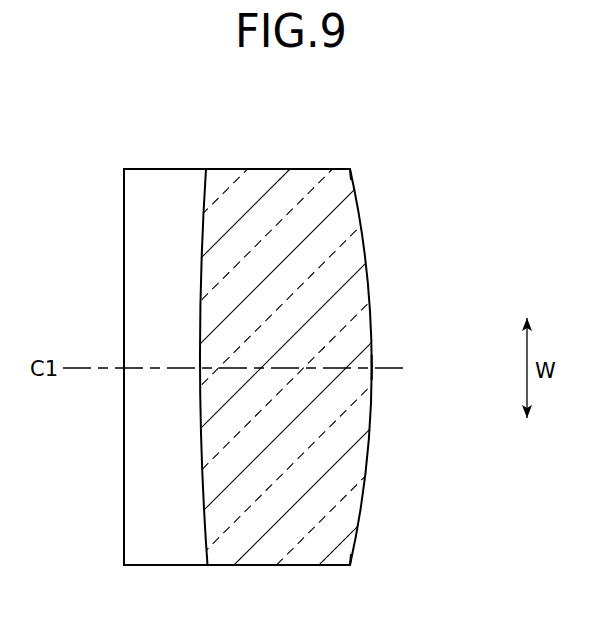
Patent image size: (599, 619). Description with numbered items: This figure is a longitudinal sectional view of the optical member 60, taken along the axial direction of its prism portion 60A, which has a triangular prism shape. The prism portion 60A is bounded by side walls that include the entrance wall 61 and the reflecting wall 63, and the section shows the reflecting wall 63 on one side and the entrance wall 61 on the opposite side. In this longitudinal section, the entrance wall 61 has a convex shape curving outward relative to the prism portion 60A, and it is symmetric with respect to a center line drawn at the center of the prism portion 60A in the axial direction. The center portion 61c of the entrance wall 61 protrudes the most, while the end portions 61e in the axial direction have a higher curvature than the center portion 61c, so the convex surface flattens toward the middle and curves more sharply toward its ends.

The prism portion 60A is at (148, 164).
The optical member 60 is at (257, 143).
The entrance wall 61 is at (372, 418).
The center portion 61c is at (372, 363).
The end portions 61e is at (355, 178).
The reflecting wall 63 is at (152, 418).